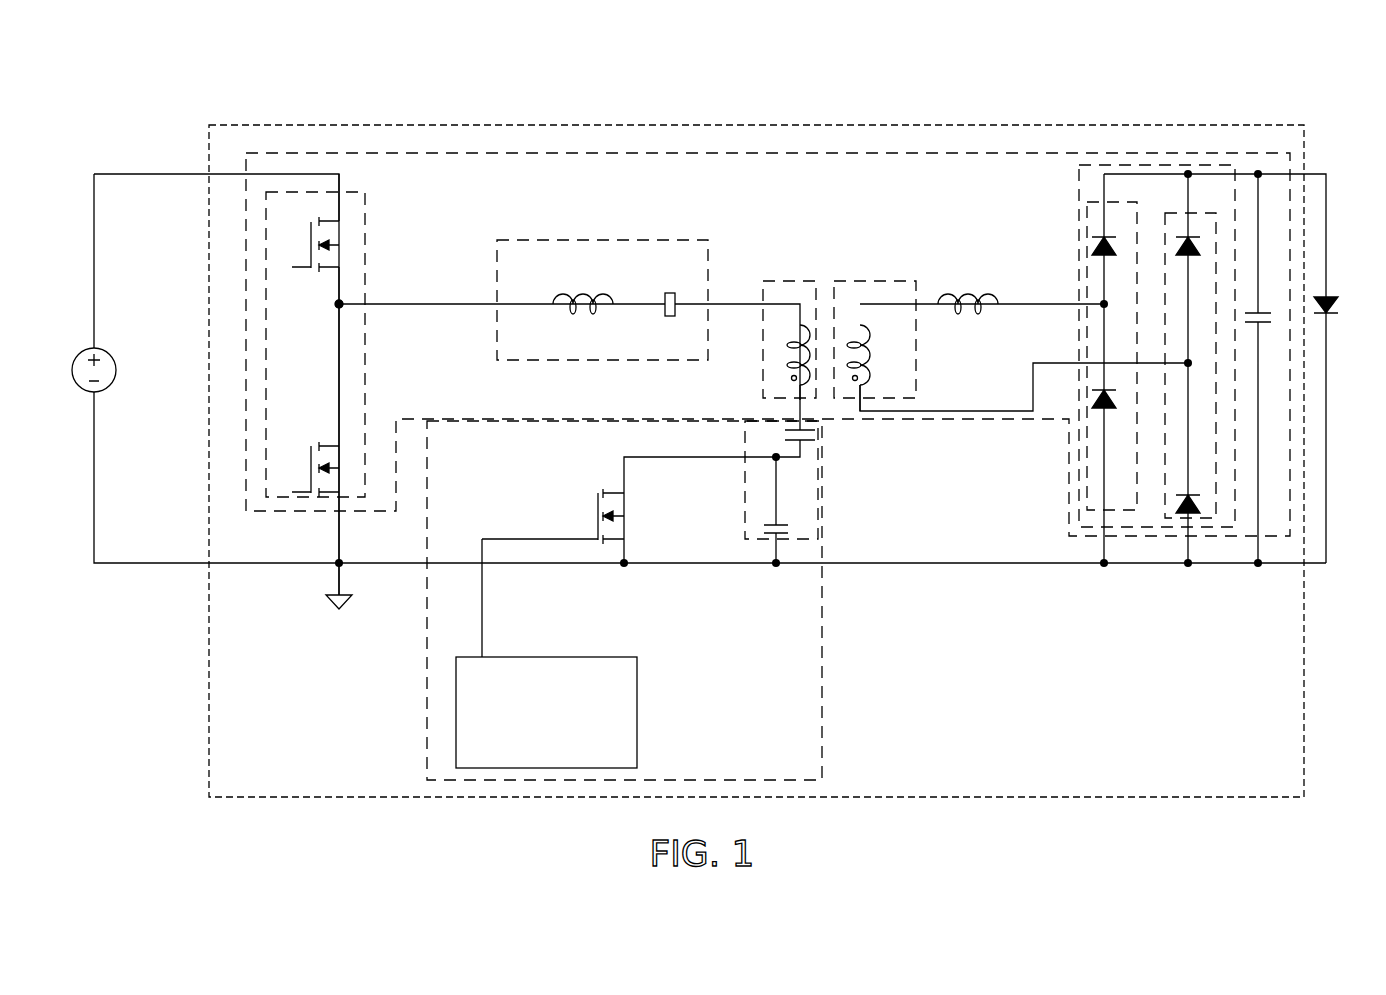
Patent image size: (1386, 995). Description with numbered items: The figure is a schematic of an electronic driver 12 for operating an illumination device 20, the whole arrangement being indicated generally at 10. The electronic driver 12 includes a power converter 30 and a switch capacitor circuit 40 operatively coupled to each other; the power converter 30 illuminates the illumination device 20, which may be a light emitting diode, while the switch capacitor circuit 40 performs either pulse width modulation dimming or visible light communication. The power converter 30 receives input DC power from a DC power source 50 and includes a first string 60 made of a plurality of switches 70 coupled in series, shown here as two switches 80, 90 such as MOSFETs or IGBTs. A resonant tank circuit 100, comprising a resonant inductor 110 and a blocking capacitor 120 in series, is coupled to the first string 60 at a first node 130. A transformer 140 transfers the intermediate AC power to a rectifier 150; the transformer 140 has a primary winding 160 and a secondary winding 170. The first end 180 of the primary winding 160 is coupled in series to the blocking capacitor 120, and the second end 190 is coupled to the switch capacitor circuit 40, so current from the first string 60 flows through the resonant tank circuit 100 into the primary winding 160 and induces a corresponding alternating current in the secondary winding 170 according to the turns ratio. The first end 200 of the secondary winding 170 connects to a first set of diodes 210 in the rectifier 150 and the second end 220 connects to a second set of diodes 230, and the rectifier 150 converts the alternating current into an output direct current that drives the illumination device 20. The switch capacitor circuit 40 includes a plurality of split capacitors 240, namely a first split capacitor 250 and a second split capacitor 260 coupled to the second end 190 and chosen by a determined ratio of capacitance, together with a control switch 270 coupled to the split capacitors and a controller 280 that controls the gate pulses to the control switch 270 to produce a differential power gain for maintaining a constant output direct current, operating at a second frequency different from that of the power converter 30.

The power conversion system 10 is at (898, 77).
The electronic driver 12 is at (271, 124).
The illumination device 20 is at (1332, 296).
The power converter 30 is at (397, 153).
The switch capacitor circuit 40 is at (822, 690).
The direct current (DC) power source 50 is at (101, 352).
The first string 60 is at (340, 365).
The plurality of switches 70 is at (365, 197).
The switch 80 is at (311, 244).
The switch 90 is at (311, 467).
The resonant tank circuit 100 is at (567, 240).
The resonant inductor 110 is at (572, 293).
The blocking capacitor 120 is at (668, 314).
The first node 130 is at (341, 303).
The transformer 140 is at (885, 281).
The rectifier 150 is at (1079, 190).
The primary winding 160 is at (810, 329).
The secondary winding 170 is at (872, 351).
The first end 180 is at (800, 302).
The second end 190 is at (796, 388).
The first end 200 is at (862, 303).
The first set of diodes 210 is at (1122, 202).
The second end 220 is at (868, 393).
The second set of diodes 230 is at (1170, 520).
The plurality of split capacitors 240 is at (745, 428).
The first split capacitor 250 is at (805, 445).
The second split capacitor 260 is at (768, 526).
The control switch 270 is at (598, 500).
The controller 280 is at (595, 657).